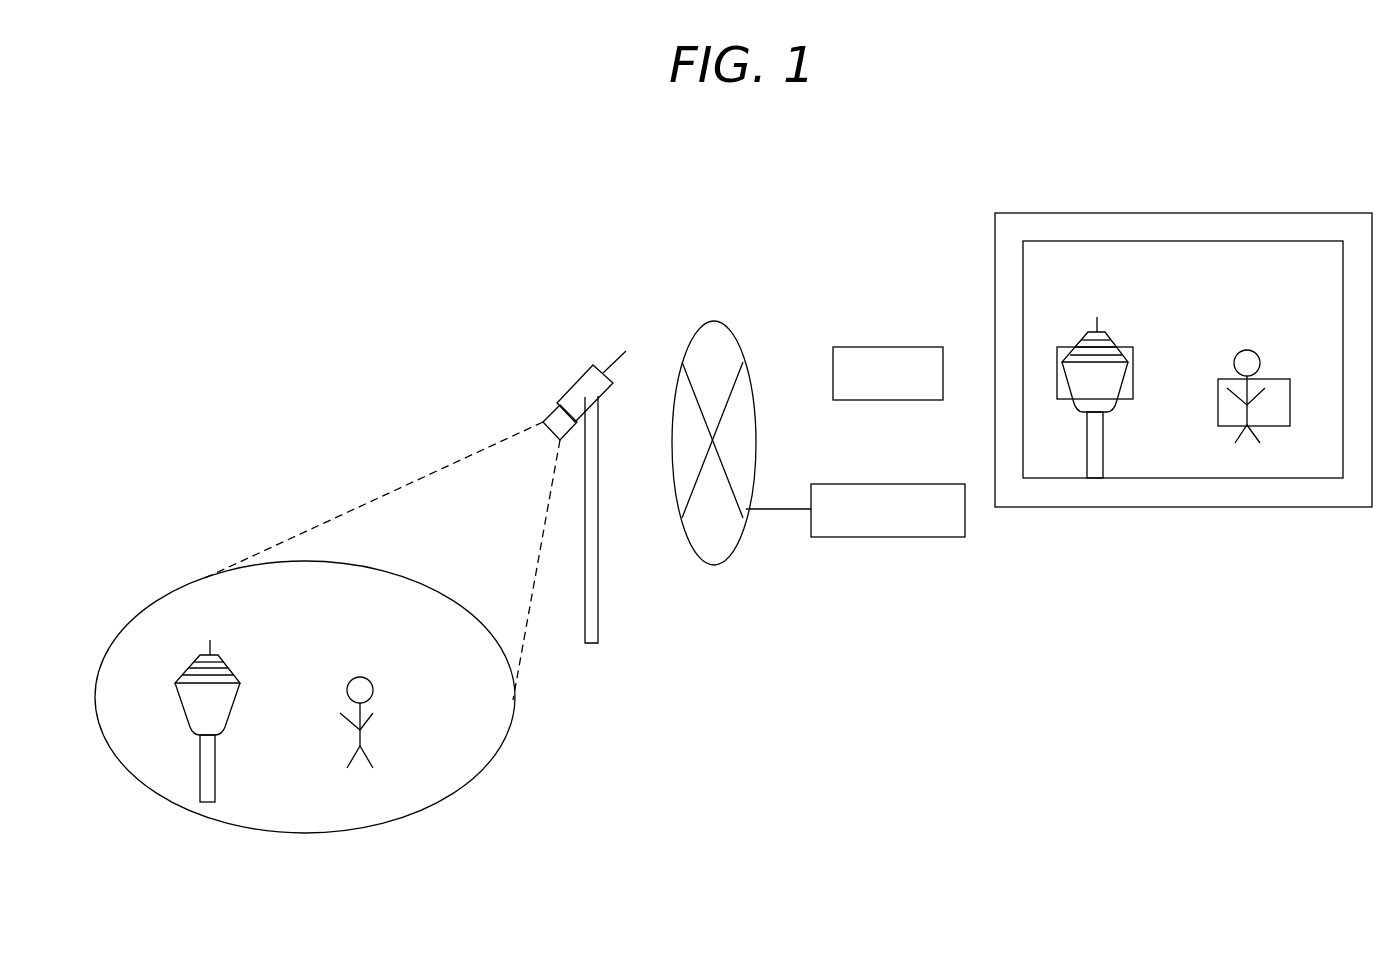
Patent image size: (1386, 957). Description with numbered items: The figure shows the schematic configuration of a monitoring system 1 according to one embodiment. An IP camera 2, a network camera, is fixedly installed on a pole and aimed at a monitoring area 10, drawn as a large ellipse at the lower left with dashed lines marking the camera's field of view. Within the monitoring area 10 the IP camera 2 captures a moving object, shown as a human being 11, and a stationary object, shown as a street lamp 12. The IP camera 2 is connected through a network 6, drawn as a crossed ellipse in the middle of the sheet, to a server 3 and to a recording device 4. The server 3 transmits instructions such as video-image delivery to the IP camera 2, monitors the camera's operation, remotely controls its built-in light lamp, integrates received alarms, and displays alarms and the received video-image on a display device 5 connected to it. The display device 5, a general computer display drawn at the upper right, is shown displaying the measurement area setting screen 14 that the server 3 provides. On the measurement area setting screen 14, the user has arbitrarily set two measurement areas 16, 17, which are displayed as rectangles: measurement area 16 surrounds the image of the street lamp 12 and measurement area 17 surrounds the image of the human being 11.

The monitoring system 1 is at (710, 231).
The IP camera 2 is at (575, 383).
The server 3 is at (913, 347).
The recording device 4 is at (913, 484).
The display device 5 is at (1047, 213).
The network 6 is at (722, 322).
The monitoring area 10 is at (195, 813).
The human being 11 is at (364, 681).
The street lamp 12 is at (220, 664).
The measurement area setting screen 14 is at (1193, 240).
The measurement area 16 is at (1123, 400).
The measurement area 17 is at (1277, 427).